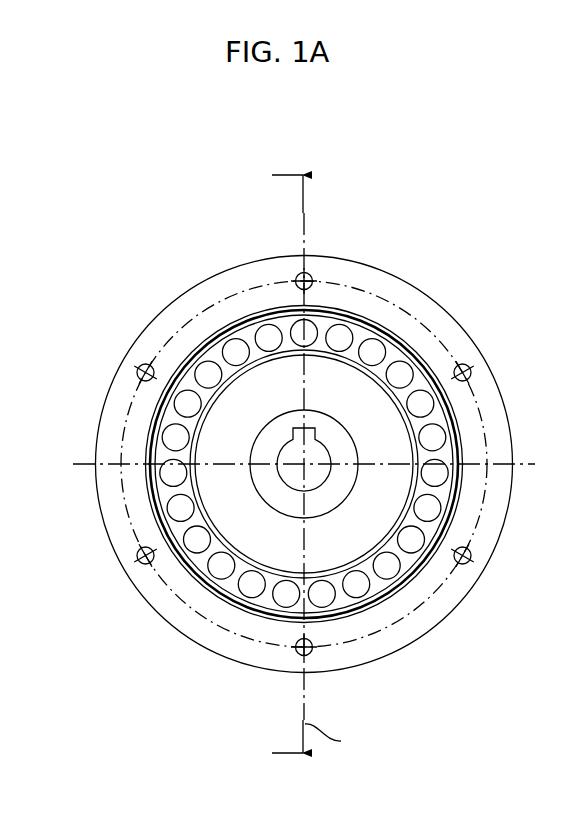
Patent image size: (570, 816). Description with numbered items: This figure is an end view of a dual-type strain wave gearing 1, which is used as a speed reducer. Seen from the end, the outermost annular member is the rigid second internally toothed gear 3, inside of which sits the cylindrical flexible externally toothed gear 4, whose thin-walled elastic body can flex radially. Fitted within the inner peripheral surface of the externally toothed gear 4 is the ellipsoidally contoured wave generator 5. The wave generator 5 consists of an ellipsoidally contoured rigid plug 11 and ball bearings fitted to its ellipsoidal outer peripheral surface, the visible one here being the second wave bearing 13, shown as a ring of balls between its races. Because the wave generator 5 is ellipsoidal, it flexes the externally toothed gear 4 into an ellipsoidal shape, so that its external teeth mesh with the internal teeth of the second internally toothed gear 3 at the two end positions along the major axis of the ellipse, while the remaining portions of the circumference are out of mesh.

The strain wave gearing 1 is at (410, 226).
The second internally toothed gear 3 is at (172, 316).
The externally toothed gear 4 is at (185, 355).
The wave generator 5 is at (172, 403).
The rigid plug 11 is at (198, 488).
The second wave bearing 13 is at (162, 418).